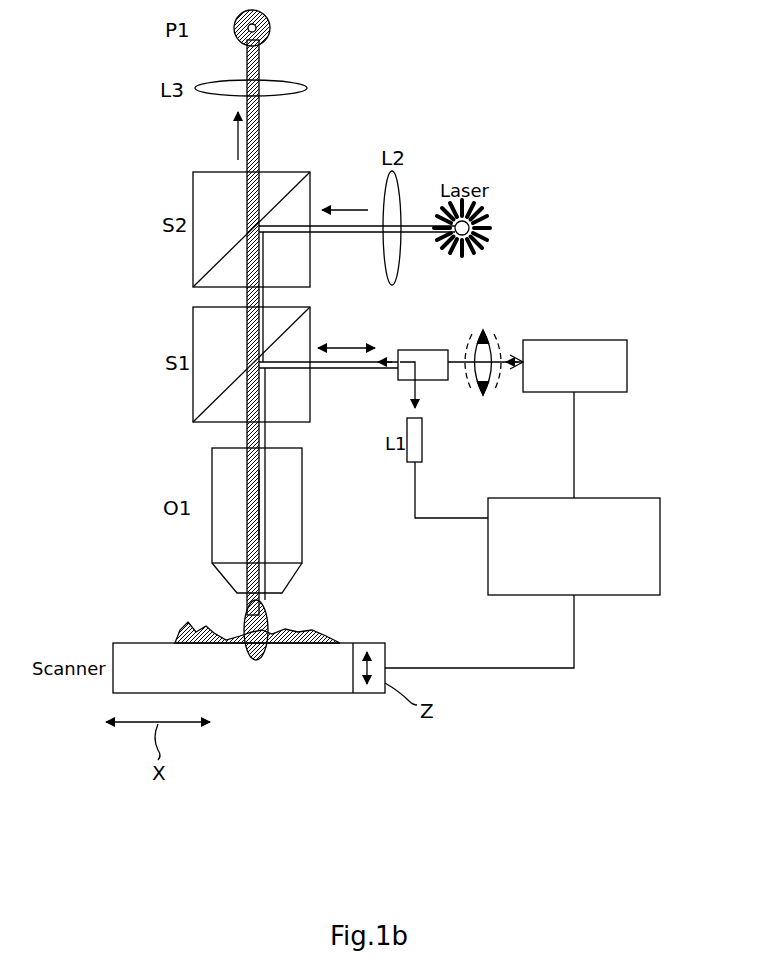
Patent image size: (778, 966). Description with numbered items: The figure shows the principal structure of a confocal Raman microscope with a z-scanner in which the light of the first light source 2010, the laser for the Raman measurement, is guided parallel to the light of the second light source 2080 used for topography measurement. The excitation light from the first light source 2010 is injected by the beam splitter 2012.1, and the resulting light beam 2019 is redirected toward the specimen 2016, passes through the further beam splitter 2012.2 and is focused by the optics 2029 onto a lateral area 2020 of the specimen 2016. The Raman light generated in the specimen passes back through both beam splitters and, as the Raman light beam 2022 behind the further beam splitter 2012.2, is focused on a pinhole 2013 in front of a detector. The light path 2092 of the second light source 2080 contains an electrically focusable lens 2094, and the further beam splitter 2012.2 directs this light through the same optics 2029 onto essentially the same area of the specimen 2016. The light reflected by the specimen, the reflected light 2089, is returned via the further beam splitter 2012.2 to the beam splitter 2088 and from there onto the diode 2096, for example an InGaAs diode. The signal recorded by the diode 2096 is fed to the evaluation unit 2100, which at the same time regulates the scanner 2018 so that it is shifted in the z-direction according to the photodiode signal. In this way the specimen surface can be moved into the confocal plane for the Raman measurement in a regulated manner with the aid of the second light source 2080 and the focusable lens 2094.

The pinhole 2013 is at (270, 24).
The Raman light beam 2022 is at (258, 62).
The beam splitter 2012.1 is at (193, 180).
The further beam splitter 2012.2 is at (193, 320).
The light beam 2019 is at (400, 236).
The first light source 2010 is at (490, 226).
The beam splitter 2088 is at (348, 372).
The electrically focusable lens 2094 is at (483, 330).
The light path of the second light source 2092 is at (522, 372).
The second light source 2080 is at (627, 365).
The diode 2096 is at (422, 440).
The evaluation unit 2100 is at (660, 513).
The optics 2029 is at (292, 462).
The reflected light 2089 is at (262, 497).
The lateral area 2020 is at (273, 625).
The specimen 2016 is at (176, 632).
The scanner 2018 is at (350, 661).